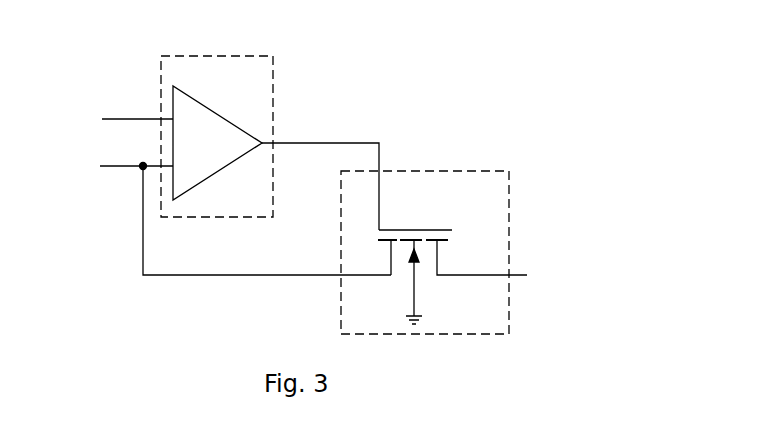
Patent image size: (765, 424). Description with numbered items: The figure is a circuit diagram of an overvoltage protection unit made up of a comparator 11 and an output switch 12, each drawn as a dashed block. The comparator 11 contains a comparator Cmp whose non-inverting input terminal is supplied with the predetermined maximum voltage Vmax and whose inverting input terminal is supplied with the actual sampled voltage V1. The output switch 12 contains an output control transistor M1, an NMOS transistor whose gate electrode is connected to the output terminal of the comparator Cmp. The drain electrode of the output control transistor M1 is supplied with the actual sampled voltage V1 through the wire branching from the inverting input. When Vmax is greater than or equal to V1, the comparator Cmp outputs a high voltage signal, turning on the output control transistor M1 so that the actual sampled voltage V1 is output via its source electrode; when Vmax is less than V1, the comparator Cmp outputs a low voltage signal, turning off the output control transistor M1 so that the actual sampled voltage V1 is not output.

The comparator 11 is at (220, 115).
The output switch 12 is at (434, 229).
The comparator CMP Cmp is at (217, 143).
The output control transistor M1 is at (452, 258).
The predetermined maximum voltage Vmax is at (129, 108).
The actual sampled voltage V1 is at (241, 211).